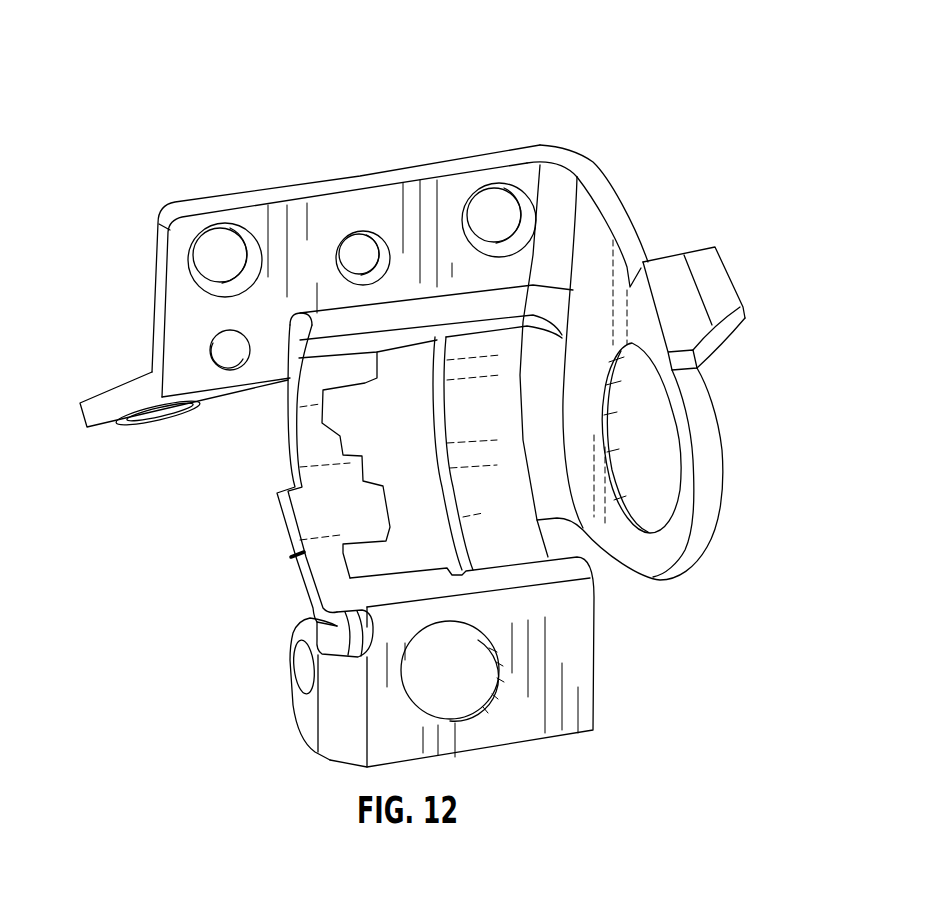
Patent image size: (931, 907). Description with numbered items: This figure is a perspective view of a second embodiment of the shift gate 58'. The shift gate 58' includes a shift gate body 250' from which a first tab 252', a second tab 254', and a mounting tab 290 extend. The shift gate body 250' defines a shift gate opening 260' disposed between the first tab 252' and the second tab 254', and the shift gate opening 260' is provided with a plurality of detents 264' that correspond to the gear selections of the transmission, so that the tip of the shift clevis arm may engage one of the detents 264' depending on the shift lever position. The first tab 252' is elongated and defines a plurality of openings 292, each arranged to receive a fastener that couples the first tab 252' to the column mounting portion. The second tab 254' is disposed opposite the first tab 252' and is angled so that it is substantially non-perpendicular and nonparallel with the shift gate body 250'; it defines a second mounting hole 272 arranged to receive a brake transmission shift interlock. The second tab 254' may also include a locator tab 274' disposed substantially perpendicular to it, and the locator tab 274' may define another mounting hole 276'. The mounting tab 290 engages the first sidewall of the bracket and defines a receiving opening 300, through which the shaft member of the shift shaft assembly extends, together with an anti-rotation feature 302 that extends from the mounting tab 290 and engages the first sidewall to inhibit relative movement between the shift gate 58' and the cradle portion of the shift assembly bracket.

The shift gate 58' is at (421, 419).
The first tab 252' is at (333, 317).
The plurality of openings 292 is at (232, 235).
The mounting tab 290 is at (588, 292).
The anti-rotation feature 302 is at (710, 277).
The receiving opening 300 is at (633, 485).
The shift gate opening 260' is at (430, 452).
The plurality of detents 264' is at (372, 465).
The shift gate body 250' is at (278, 485).
The second tab 254' is at (437, 668).
The second mounting hole 272 is at (470, 707).
The locator tab 274' is at (267, 689).
The mounting hole 276' is at (257, 667).